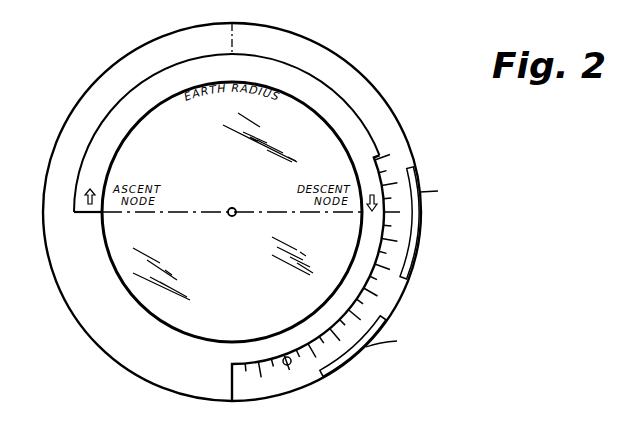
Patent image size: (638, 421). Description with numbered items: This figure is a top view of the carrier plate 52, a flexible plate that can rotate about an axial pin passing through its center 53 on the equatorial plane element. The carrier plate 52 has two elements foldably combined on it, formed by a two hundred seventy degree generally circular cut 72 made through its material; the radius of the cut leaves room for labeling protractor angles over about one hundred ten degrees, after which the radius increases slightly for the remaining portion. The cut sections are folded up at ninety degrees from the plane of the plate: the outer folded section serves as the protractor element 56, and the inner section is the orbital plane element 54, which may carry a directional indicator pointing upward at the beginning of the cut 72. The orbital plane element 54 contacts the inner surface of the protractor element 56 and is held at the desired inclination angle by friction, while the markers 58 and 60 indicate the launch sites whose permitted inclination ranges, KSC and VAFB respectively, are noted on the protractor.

The carrier plate 52 is at (92, 91).
The center of carrier plate 53 is at (241, 197).
The orbital plane element 54 is at (320, 98).
The protractor element 56 is at (396, 256).
The KSC launch site marker 58 is at (342, 366).
The VAFB launch site marker 60 is at (418, 186).
The cut 72 is at (284, 358).